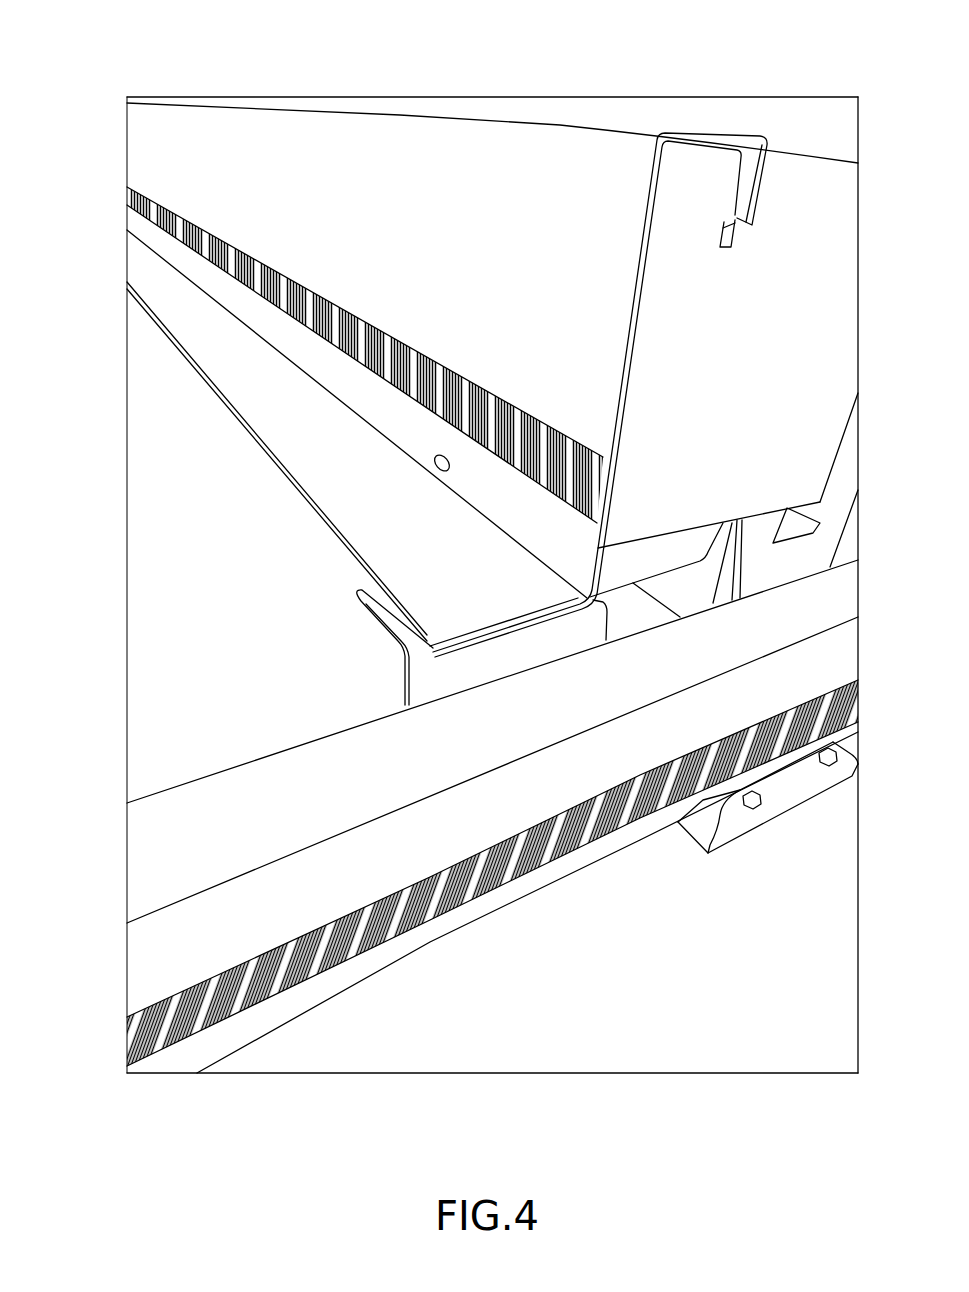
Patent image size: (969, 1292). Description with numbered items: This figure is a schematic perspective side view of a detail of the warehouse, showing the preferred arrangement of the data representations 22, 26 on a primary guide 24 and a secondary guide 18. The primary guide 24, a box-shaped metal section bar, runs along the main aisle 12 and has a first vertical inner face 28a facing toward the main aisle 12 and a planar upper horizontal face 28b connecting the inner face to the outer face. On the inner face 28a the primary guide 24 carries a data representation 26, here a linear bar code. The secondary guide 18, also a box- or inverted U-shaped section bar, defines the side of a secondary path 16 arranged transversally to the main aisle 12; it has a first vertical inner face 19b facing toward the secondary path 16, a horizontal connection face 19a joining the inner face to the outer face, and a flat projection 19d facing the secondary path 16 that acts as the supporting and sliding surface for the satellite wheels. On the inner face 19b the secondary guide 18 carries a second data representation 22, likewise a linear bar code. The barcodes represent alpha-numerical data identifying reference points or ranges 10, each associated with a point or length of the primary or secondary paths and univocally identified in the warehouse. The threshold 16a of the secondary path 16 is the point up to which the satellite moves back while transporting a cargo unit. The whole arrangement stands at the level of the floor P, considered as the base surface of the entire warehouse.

The reference points or ranges 10 is at (492, 403).
The main aisle 12 is at (705, 1012).
The secondary path 16 is at (215, 657).
The threshold 16a is at (455, 652).
The secondary guide 18 is at (306, 97).
The horizontal connection face 19a is at (650, 134).
The first vertical inner face 19b is at (180, 147).
The flat projection 19d is at (160, 292).
The data representation 22 is at (335, 351).
The primary guide 24 is at (120, 1000).
The data representation 26 is at (195, 1018).
The first vertical inner face 28a is at (163, 943).
The planar upper horizontal face 28b is at (167, 857).
The floor P is at (505, 1002).